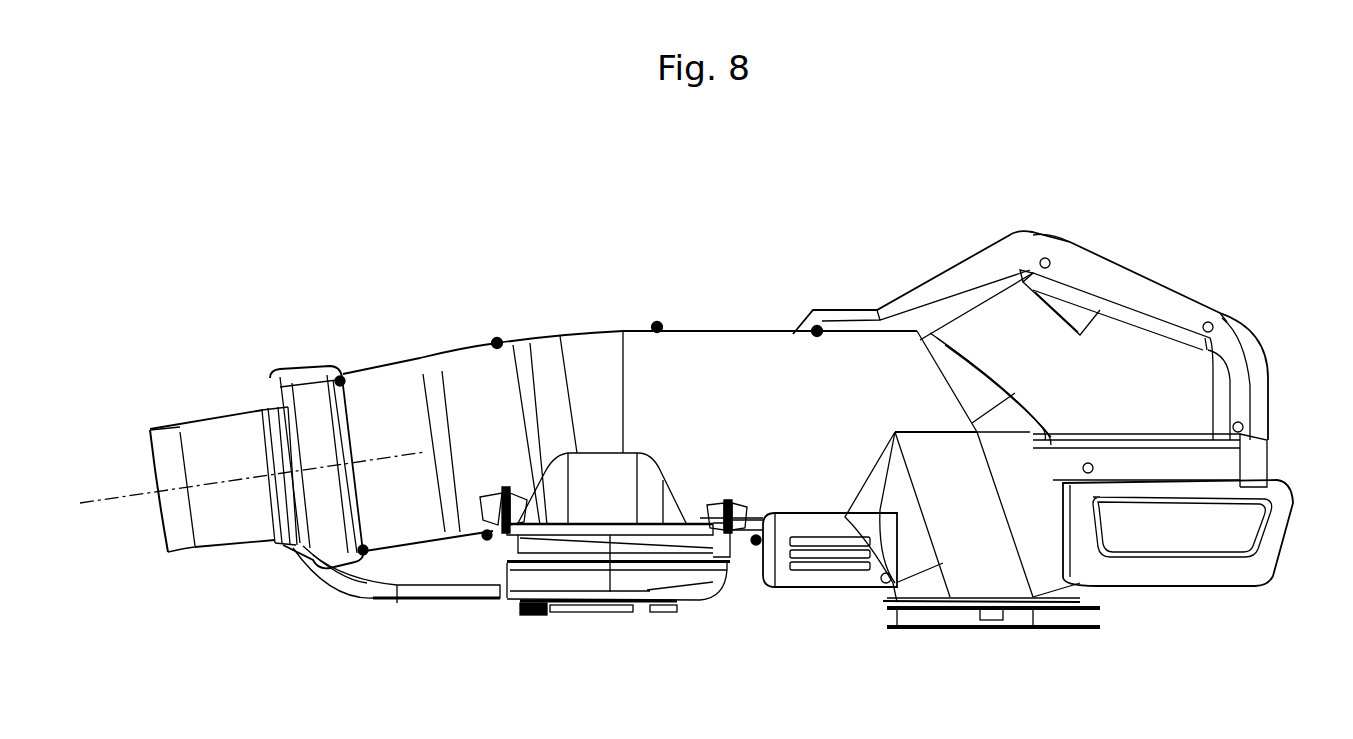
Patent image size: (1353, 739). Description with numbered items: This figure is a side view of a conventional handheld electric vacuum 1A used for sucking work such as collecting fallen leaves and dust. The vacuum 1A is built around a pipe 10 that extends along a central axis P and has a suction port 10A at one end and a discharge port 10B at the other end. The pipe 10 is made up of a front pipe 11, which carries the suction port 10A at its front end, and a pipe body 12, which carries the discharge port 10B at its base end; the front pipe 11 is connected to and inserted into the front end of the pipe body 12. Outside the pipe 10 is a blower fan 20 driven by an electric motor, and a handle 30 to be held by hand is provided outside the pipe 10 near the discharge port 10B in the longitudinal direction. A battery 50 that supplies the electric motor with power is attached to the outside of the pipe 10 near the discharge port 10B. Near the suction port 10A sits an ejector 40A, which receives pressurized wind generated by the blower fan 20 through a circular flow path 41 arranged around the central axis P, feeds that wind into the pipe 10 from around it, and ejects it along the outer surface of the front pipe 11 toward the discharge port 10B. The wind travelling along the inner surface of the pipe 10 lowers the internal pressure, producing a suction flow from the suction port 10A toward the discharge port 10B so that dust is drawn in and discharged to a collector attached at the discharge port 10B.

The vacuum 1A is at (438, 300).
The pipe 10 is at (607, 475).
The front pipe 11 is at (193, 424).
The pipe body 12 is at (560, 332).
The suction port 10A is at (160, 528).
The discharge port 10B is at (967, 633).
The blower fan 20 is at (712, 602).
The handle 30 is at (1192, 281).
The ejector 40A is at (293, 360).
The circular flow path 41 is at (333, 538).
The battery 50 is at (1266, 584).
The central axis P is at (113, 496).